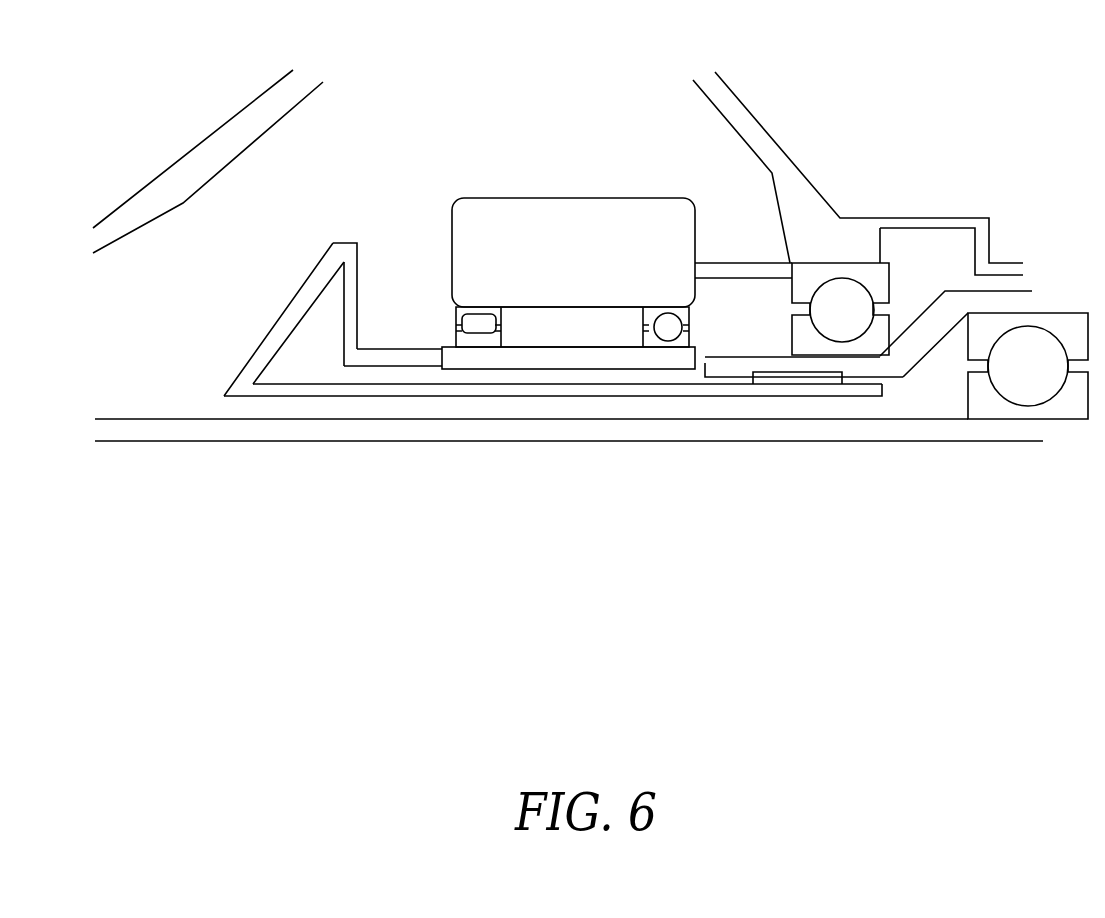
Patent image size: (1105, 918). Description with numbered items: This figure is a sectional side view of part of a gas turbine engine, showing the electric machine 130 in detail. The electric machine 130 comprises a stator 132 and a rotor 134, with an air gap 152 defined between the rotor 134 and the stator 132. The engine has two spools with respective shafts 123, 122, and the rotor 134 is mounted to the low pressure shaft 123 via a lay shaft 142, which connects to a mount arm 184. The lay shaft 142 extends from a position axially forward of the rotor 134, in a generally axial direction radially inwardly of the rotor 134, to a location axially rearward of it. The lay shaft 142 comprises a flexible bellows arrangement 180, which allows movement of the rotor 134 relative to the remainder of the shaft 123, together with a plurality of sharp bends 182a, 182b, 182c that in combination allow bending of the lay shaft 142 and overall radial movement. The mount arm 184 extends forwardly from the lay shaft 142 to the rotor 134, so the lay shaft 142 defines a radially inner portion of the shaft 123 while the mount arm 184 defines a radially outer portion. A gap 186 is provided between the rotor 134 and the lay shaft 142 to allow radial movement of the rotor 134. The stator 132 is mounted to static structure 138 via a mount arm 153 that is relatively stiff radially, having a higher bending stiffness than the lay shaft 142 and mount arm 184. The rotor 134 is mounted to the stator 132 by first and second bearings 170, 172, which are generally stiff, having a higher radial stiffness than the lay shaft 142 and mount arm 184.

The shaft 122 is at (946, 444).
The low pressure shaft 123 is at (930, 317).
The electric machine 130 is at (572, 178).
The stator 132 is at (605, 198).
The rotor 134 is at (633, 368).
The static structure 138 is at (755, 115).
The lay shaft 142 is at (475, 398).
The air gap 152 is at (538, 329).
The mount arm 153 is at (790, 268).
The first bearing 170 is at (662, 295).
The second bearing 172 is at (482, 295).
The flexible bellows arrangement 180 is at (259, 448).
The sharp bend 182a is at (240, 368).
The sharp bend 182b is at (342, 240).
The sharp bend 182c is at (358, 342).
The mount arm 184 is at (413, 352).
The gap 186 is at (585, 377).